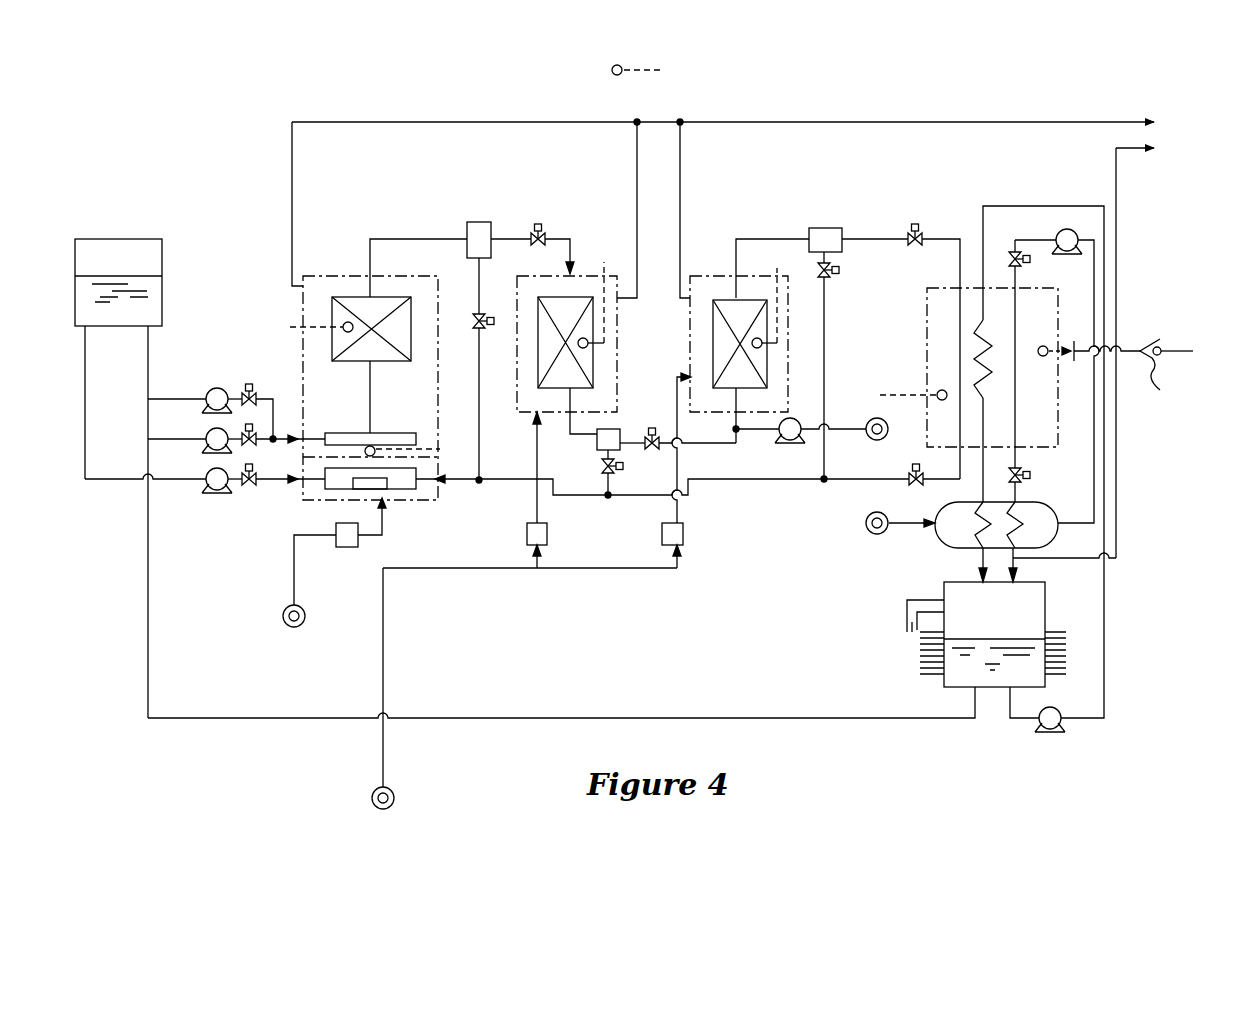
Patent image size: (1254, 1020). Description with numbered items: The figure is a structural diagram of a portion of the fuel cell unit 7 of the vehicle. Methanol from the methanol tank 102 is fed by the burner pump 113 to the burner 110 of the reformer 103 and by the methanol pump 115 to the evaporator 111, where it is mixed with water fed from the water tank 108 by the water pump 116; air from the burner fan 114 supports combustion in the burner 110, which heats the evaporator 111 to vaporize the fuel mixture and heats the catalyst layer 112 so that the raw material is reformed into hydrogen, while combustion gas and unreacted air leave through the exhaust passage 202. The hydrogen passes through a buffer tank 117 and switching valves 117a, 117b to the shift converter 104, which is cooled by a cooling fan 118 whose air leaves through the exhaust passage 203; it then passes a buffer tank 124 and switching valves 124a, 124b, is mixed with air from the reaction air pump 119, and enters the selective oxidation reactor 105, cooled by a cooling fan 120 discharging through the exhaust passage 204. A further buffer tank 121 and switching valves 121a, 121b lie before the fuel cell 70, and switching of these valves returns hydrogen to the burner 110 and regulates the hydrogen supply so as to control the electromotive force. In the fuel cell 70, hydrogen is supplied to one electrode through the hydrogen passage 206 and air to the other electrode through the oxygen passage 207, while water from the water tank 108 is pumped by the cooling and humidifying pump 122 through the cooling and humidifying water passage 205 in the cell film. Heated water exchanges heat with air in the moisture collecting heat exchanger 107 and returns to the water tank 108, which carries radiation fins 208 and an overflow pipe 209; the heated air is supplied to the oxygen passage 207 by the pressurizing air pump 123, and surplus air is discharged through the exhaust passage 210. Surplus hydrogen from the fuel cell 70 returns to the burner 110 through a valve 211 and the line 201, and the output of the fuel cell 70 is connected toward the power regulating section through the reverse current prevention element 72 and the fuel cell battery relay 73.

The fuel cell unit 7 is at (1002, 106).
The fuel cell 70 is at (924, 312).
The reverse current prevention element 72 is at (1070, 358).
The fuel cell battery relay 73 is at (1166, 379).
The methanol tank 102 is at (127, 250).
The reformer 103 is at (349, 262).
The shift converter 104 is at (526, 264).
The selective oxidation reactor 105 is at (708, 266).
The moisture collecting heat exchanger 107 is at (1040, 496).
The water tank 108 is at (1046, 622).
The burner 110 is at (428, 488).
The evaporator 111 is at (392, 430).
The catalyst layer 112 is at (412, 310).
The burner pump 113 is at (213, 482).
The burner fan 114 is at (336, 526).
The methanol pump 115 is at (213, 392).
The water pump 116 is at (203, 432).
The buffer tank 117 is at (479, 226).
The switching valve 117a is at (541, 224).
The switching valve 117b is at (493, 326).
The cooling fan 118 is at (527, 527).
The reaction air pump 119 is at (788, 434).
The cooling fan 120 is at (690, 530).
The buffer tank 121 is at (827, 228).
The switching valve 121a is at (912, 225).
The switching valve 121b is at (818, 268).
The cooling and humidifying pump 122 is at (1047, 720).
The pressurizing air pump 123 is at (1068, 232).
The buffer tank 124 is at (612, 440).
The switching valve 124a is at (652, 455).
The switching valve 124b is at (600, 466).
The line 201 is at (510, 482).
The exhaust passage 202 is at (292, 172).
The exhaust passage 203 is at (637, 208).
The exhaust passage 204 is at (681, 190).
The cooling and humidifying water passage 205 is at (1000, 205).
The hydrogen passage 206 is at (968, 380).
The oxygen passage 207 is at (1017, 350).
The radiation fins 208 is at (1057, 667).
The overflow pipe 209 is at (908, 636).
The exhaust passage 210 is at (1040, 560).
The valve 211 is at (908, 477).